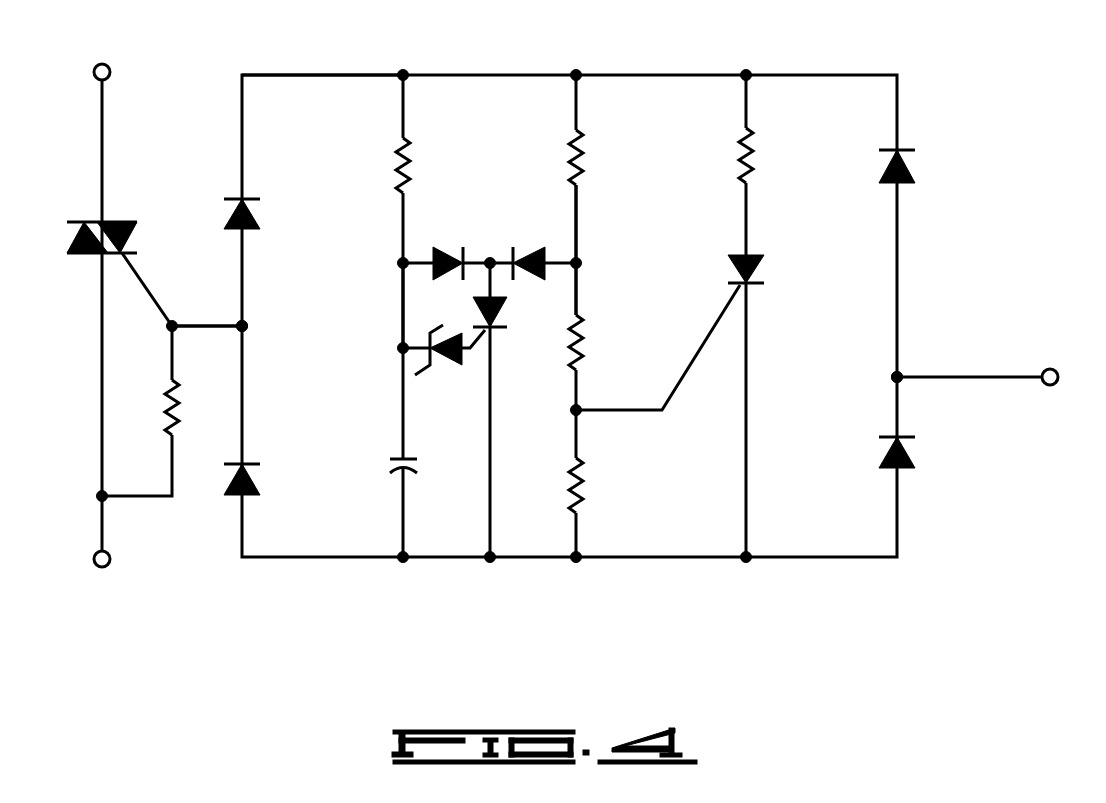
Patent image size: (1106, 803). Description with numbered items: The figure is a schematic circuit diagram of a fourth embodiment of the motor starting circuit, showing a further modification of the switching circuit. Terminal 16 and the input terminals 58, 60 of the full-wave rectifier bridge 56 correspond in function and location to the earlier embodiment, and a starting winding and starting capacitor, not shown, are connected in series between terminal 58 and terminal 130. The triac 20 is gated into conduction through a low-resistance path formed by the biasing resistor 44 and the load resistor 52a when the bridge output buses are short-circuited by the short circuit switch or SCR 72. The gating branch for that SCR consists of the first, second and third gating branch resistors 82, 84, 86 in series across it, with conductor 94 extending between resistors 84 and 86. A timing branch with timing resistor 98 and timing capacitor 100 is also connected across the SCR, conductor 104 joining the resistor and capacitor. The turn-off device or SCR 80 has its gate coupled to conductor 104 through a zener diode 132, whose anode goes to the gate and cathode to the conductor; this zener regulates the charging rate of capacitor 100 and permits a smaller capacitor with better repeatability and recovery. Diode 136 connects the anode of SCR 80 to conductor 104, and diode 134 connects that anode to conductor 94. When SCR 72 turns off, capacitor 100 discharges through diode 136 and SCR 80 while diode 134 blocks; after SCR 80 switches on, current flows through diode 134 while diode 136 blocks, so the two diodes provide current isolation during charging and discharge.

The terminal 130 is at (107, 63).
The terminal 16 is at (98, 568).
The full-wave rectifier bridge 56 is at (283, 70).
The triac 20 is at (122, 220).
The input terminal of rectifier bridge 60 is at (246, 320).
The biasing resistor 44 is at (180, 404).
The timing resistor 98 is at (398, 142).
The conductor 104 is at (400, 300).
The timing capacitor 100 is at (395, 452).
The diode 136 is at (450, 252).
The diode 134 is at (530, 250).
The turn-off device or SCR 80 is at (508, 312).
The zener diode 132 is at (446, 368).
The conductor 94 is at (580, 222).
The third gating branch resistor 86 is at (584, 152).
The second gating branch resistor 84 is at (585, 332).
The first gating branch resistor 82 is at (585, 476).
The load resistor 52a is at (757, 150).
The short circuit switch or SCR 72 is at (766, 266).
The input terminal of rectifier bridge 58 is at (905, 372).